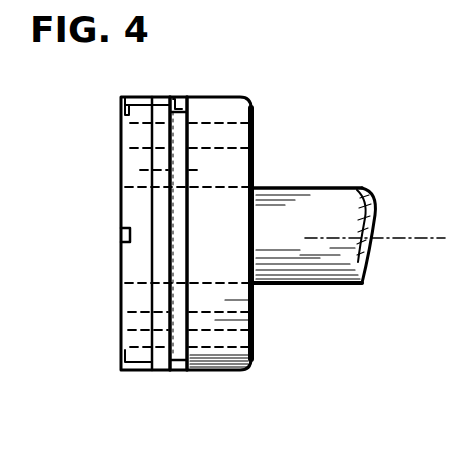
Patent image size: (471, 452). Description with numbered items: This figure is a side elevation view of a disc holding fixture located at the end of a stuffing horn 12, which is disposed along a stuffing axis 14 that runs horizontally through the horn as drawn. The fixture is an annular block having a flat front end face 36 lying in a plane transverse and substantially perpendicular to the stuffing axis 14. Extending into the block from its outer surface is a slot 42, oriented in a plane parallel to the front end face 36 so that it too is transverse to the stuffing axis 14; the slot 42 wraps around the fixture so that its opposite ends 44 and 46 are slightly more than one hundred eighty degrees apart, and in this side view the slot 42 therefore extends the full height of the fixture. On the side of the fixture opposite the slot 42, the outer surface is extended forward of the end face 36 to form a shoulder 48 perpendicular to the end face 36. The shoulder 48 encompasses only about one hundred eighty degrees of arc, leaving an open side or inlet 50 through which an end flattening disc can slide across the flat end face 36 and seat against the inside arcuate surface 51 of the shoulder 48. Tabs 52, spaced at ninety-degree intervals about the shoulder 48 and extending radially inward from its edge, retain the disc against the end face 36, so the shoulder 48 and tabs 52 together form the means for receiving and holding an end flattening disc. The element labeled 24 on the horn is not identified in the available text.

The stuffing horn 12 is at (307, 188).
The stuffing axis 14 is at (384, 232).
The tube flange 24 is at (268, 272).
The front end face 36 is at (150, 162).
The slot 42 is at (181, 133).
The slot end 44 is at (178, 103).
The slot end 46 is at (180, 365).
The shoulder 48 is at (121, 113).
The open side or inlet 50 is at (141, 272).
The inside arcuate surface 51 is at (139, 332).
The tabs 52 is at (121, 128).